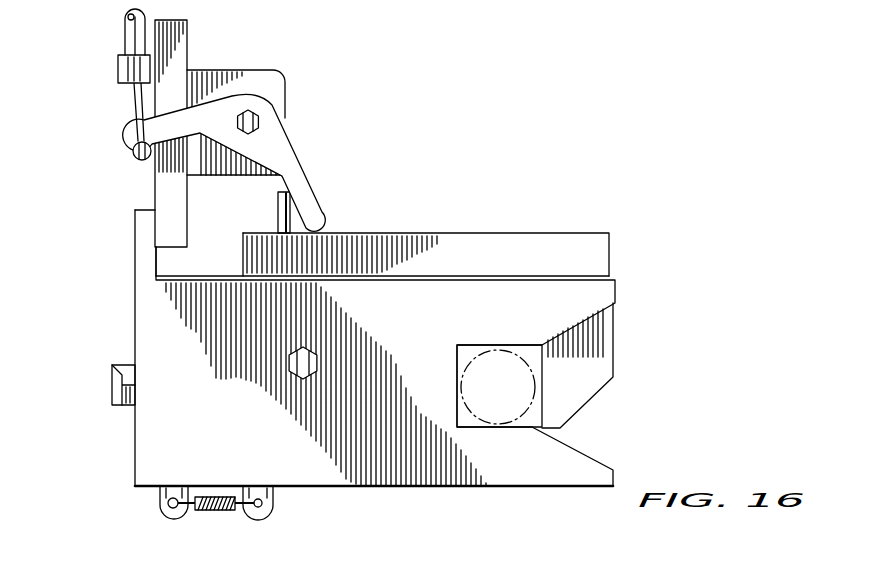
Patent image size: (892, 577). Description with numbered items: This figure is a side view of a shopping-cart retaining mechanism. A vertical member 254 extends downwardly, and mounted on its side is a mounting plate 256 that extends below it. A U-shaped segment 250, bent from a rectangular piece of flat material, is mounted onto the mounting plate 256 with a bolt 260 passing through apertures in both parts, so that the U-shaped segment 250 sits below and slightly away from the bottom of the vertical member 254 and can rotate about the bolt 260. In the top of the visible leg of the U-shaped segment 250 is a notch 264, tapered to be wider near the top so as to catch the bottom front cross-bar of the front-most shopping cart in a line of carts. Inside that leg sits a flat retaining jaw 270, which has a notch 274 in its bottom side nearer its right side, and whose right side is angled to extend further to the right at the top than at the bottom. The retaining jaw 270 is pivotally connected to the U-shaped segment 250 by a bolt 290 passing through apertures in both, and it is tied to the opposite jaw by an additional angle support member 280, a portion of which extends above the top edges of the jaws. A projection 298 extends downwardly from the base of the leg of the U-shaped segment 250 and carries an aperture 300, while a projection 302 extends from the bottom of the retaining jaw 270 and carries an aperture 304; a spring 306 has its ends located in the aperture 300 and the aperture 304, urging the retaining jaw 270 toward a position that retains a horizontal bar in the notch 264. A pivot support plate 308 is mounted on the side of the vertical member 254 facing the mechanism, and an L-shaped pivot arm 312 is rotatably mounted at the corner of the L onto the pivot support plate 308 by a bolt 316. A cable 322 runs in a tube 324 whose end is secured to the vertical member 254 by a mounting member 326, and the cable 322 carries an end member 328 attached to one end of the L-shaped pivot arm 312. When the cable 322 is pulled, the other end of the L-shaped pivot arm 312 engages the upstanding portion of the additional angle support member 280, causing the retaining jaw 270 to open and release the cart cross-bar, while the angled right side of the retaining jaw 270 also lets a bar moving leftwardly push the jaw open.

The U-shaped segment 250 is at (392, 470).
The vertical member 254 is at (190, 42).
The mounting plate 256 is at (133, 228).
The bolt 260 is at (115, 408).
The notch 264 is at (460, 425).
The retaining jaw 270 is at (607, 340).
The notch 274 is at (537, 410).
The additional angle support member 280 is at (278, 204).
The bolt 290 is at (307, 350).
The projection 298 is at (160, 494).
The aperture 300 is at (165, 514).
The projection 302 is at (273, 496).
The aperture 304 is at (263, 505).
The spring 306 is at (217, 512).
The pivot support plate 308 is at (250, 80).
The L-shaped pivot arm 312 is at (284, 156).
The bolt 316 is at (262, 114).
The cable 322 is at (133, 107).
The tube 324 is at (125, 37).
The mounting member 326 is at (118, 72).
The end member 328 is at (133, 152).